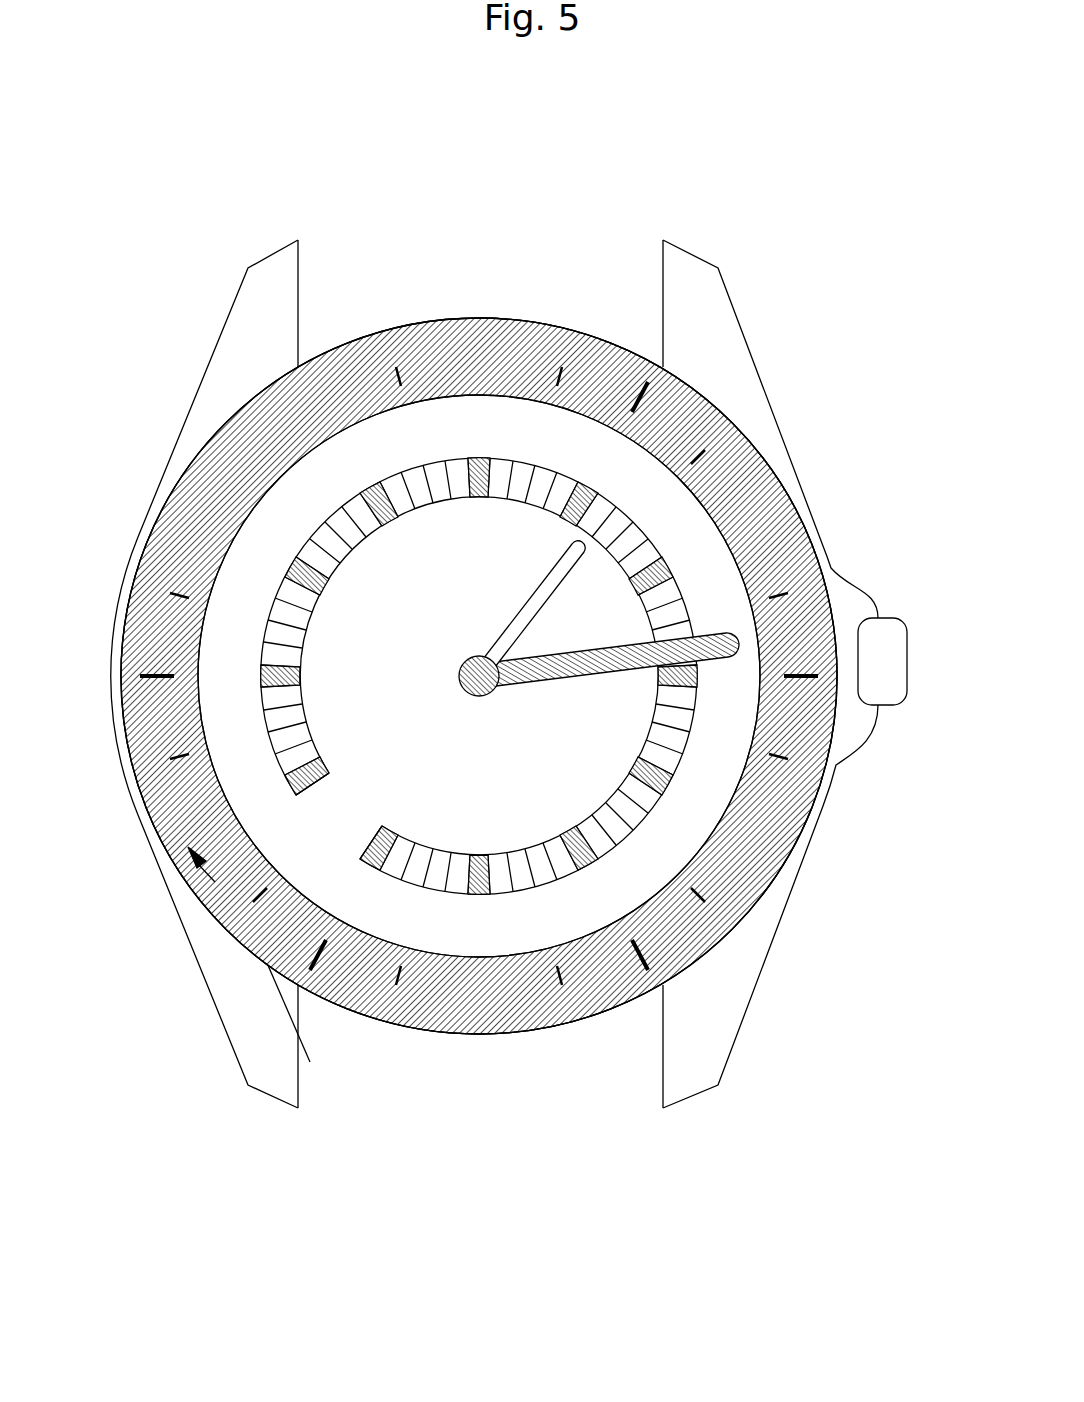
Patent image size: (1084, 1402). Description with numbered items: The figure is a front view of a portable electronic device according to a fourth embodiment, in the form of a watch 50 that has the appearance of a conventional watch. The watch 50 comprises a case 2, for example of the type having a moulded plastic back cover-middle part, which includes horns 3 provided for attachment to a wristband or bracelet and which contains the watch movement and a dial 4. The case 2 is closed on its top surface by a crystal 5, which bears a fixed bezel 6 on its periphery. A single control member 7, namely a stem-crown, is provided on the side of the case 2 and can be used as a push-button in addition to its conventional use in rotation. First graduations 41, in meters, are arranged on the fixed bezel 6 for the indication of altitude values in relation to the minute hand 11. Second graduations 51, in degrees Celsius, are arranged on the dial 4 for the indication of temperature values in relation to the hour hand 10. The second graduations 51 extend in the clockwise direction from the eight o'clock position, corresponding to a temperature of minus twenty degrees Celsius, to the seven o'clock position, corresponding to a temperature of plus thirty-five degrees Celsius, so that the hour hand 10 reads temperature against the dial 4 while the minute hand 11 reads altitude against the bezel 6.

The case 2 is at (837, 568).
The horns 3 is at (683, 290).
The dial 4 is at (650, 473).
The crystal 5 is at (229, 625).
The fixed bezel 6 is at (836, 780).
The control member 7 is at (887, 638).
The hour hand 10 is at (545, 598).
The minute hand 11 is at (528, 675).
The first graduations 41 is at (420, 992).
The watch 50 is at (610, 1178).
The second graduations 51 is at (335, 790).